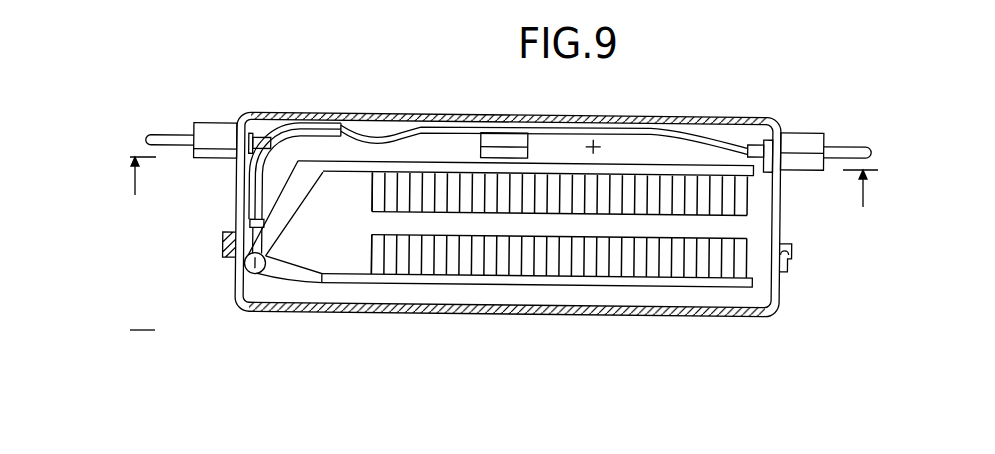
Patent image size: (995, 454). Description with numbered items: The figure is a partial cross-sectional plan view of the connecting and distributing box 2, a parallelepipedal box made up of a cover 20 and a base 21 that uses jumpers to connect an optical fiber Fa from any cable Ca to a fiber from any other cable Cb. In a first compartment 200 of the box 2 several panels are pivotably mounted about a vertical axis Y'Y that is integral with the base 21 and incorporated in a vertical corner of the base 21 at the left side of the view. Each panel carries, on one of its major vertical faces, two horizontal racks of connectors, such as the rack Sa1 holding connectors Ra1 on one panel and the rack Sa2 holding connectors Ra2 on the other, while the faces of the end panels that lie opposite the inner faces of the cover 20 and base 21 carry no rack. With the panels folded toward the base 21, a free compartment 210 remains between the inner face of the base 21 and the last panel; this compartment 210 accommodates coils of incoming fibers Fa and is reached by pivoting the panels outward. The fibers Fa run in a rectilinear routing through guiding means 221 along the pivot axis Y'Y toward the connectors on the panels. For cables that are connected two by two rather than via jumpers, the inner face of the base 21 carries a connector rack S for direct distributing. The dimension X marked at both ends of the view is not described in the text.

The connecting and distributing box 2 is at (183, 313).
The cover 20 is at (761, 316).
The base 21 is at (782, 218).
The first compartment 200 is at (527, 222).
The free compartment 210 is at (601, 150).
The guiding means 221 is at (287, 138).
The optical fiber cable Ca is at (163, 135).
The optical fiber cable Cb is at (842, 146).
The connector rack for direct distributing S is at (505, 142).
The horizontal rack Sa1 is at (370, 262).
The horizontal rack Sa2 is at (365, 175).
The connectors Ra1 is at (646, 268).
The connectors Ra2 is at (670, 187).
The optical fiber Fa is at (250, 237).
The vertical pivot axis YY is at (247, 268).
The dimension X is at (503, 199).